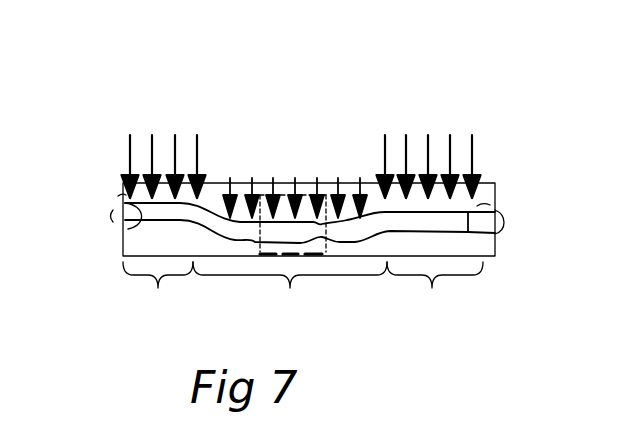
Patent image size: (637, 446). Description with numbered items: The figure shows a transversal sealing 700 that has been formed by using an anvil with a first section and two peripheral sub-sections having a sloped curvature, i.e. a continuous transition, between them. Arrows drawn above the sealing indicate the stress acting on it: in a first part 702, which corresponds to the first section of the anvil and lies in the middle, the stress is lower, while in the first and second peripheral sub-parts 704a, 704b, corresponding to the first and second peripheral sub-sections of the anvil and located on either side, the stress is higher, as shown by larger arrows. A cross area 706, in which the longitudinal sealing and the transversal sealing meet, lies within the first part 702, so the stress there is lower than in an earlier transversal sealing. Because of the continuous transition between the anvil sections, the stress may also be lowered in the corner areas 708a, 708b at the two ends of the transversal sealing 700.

The transversal sealing 700 is at (212, 90).
The first part 702 is at (290, 259).
The first peripheral sub-part 704a is at (158, 292).
The second peripheral sub-part 704b is at (435, 291).
The cross area 706 is at (317, 257).
The corner area 708a is at (133, 231).
The corner area 708b is at (480, 235).